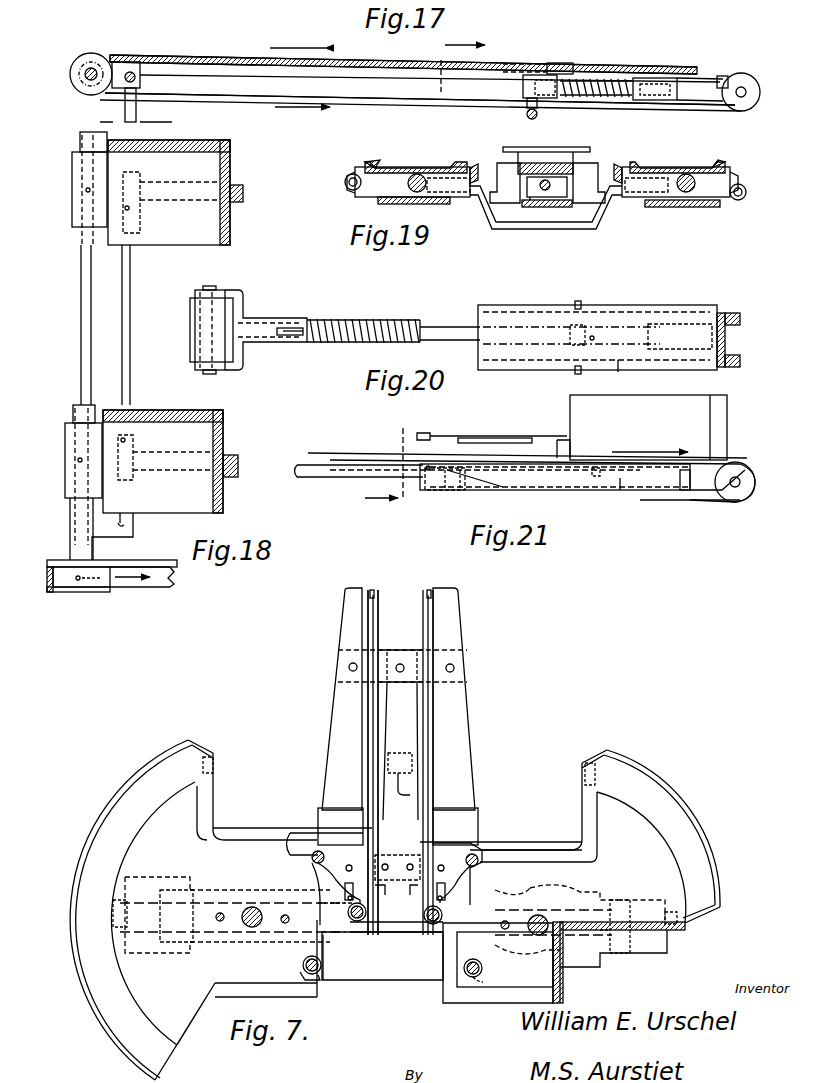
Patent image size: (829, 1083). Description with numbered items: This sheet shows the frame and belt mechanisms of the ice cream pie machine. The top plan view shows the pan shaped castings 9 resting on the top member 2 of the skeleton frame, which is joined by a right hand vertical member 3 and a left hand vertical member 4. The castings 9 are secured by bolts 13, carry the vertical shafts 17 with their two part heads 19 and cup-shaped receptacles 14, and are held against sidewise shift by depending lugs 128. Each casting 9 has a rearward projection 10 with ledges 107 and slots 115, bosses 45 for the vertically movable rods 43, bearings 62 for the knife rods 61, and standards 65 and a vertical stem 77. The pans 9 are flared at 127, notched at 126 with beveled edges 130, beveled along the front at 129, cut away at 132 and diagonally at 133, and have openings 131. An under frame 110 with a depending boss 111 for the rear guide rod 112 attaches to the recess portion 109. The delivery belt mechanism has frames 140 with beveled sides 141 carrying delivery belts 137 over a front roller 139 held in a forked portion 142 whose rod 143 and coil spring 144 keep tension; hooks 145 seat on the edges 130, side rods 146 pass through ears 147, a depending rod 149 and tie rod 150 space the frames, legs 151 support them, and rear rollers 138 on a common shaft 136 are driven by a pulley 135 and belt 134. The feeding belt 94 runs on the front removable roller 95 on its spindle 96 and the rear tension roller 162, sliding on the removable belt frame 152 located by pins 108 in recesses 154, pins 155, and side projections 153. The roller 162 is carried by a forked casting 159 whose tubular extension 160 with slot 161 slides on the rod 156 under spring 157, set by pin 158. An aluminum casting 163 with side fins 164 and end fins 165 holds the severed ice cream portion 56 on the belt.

In FIG. 7, the top member 2 is at (580, 898).
In FIG. 7, the right hand vertical member 3 is at (632, 940).
In FIG. 7, the left hand vertical member 4 is at (386, 975).
In FIG. 7, the pan shaped casting 9 is at (148, 840).
In FIG. 19, the rearward projection 10 is at (515, 175).
In FIG. 7, the rearward projection 10 is at (340, 712).
In FIG. 7, the bolt 13 is at (218, 925).
In FIG. 7, the cup-shaped receptacle 14 is at (163, 945).
In FIG. 7, the vertical shaft 17 is at (250, 906).
In FIG. 17, the two part head 19 is at (456, 80).
In FIG. 21, the two part head 19 is at (387, 463).
In FIG. 7, the vertically movable rod 43 is at (322, 985).
In FIG. 7, the boss 45 is at (305, 978).
In FIG. 21, the severed portion of ice cream 56 is at (727, 430).
In FIG. 7, the vertical rod 61 is at (356, 932).
In FIG. 7, the bearing 62 is at (348, 916).
In FIG. 7, the standard 65 is at (340, 890).
In FIG. 7, the vertical stem 77 is at (312, 850).
In FIG. 19, the feeding belt 94 is at (557, 207).
In FIG. 21, the feeding belt 94 is at (316, 453).
In FIG. 21, the front removable roller 95 is at (742, 500).
In FIG. 21, the spindle 96 is at (732, 488).
In FIG. 7, the ledge 107 is at (424, 630).
In FIG. 7, the pin 108 is at (380, 888).
In FIG. 7, the recess portion 109 is at (396, 856).
In FIG. 7, the under frame 110 is at (410, 720).
In FIG. 7, the depending boss 111 is at (410, 795).
In FIG. 7, the rear guide rod 112 is at (398, 753).
In FIG. 7, the slot 115 is at (372, 590).
In FIG. 7, the notch 126 is at (220, 825).
In FIG. 7, the flared portion 127 is at (84, 961).
In FIG. 7, the depending lug 128 is at (113, 912).
In FIG. 7, the beveled portion 129 is at (238, 988).
In FIG. 7, the beveled edge 130 is at (530, 841).
In FIG. 7, the opening 131 is at (213, 773).
In FIG. 7, the cut away 132 is at (325, 946).
In FIG. 7, the diagonal cut away 133 is at (184, 1034).
In FIG. 18, the belt 134 is at (47, 574).
In FIG. 18, the pulley 135 is at (72, 590).
In FIG. 17, the common shaft 136 is at (88, 54).
In FIG. 18, the common shaft 136 is at (81, 336).
In FIG. 17, the delivery belt 137 is at (240, 99).
In FIG. 19, the delivery belt 137 is at (423, 163).
In FIG. 17, the rear roller 138 is at (80, 90).
In FIG. 18, the rear roller 138 is at (72, 190).
In FIG. 17, the front roller 139 is at (748, 73).
In FIG. 19, the front roller 139 is at (400, 197).
In FIG. 17, the delivery belt frame 140 is at (220, 58).
In FIG. 18, the delivery belt frame 140 is at (222, 170).
In FIG. 18, the upwardly beveled side 141 is at (190, 140).
In FIG. 19, the upwardly beveled side 141 is at (372, 160).
In FIG. 17, the movable forked portion 142 is at (688, 100).
In FIG. 17, the rod 143 is at (644, 100).
In FIG. 17, the coil spring 144 is at (604, 97).
In FIG. 17, the hook 145 is at (721, 76).
In FIG. 19, the hook 145 is at (357, 167).
In FIG. 17, the adjustable side rod 146 is at (575, 98).
In FIG. 19, the adjustable side rod 146 is at (345, 183).
In FIG. 17, the ear 147 is at (555, 63).
In FIG. 19, the ear 147 is at (356, 197).
In FIG. 17, the depending rod 149 is at (534, 119).
In FIG. 19, the depending rod 149 is at (600, 229).
In FIG. 18, the tie rod 150 is at (130, 373).
In FIG. 17, the supporting leg 151 is at (136, 108).
In FIG. 18, the supporting leg 151 is at (128, 537).
In FIG. 19, the removable belt frame 152 is at (537, 190).
In FIG. 20, the removable belt frame 152 is at (626, 320).
In FIG. 21, the removable belt frame 152 is at (572, 478).
In FIG. 19, the side projection 153 is at (528, 205).
In FIG. 20, the side projection 153 is at (618, 370).
In FIG. 21, the side projection 153 is at (625, 467).
In FIG. 20, the recess 154 is at (690, 310).
In FIG. 21, the recess 154 is at (684, 492).
In FIG. 20, the pin 155 is at (576, 302).
In FIG. 21, the pin 155 is at (428, 477).
In FIG. 19, the rod 156 is at (545, 190).
In FIG. 20, the rod 156 is at (455, 327).
In FIG. 21, the rod 156 is at (310, 470).
In FIG. 20, the spring 157 is at (380, 320).
In FIG. 20, the pin 158 is at (422, 342).
In FIG. 20, the forked casting 159 is at (243, 363).
In FIG. 20, the tubular extension 160 is at (268, 322).
In FIG. 20, the slot 161 is at (298, 320).
In FIG. 20, the rear tension roller 162 is at (195, 328).
In FIG. 19, the aluminum casting 163 is at (545, 162).
In FIG. 21, the aluminum casting 163 is at (490, 438).
In FIG. 19, the side fin 164 is at (575, 147).
In FIG. 21, the side fin 164 is at (546, 422).
In FIG. 21, the end fin 165 is at (423, 432).